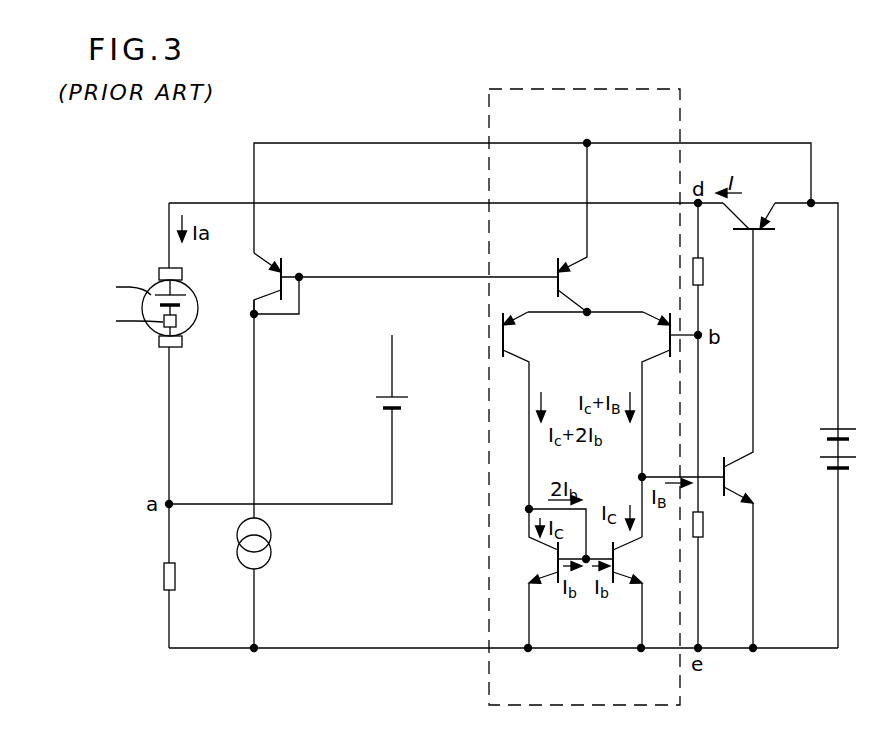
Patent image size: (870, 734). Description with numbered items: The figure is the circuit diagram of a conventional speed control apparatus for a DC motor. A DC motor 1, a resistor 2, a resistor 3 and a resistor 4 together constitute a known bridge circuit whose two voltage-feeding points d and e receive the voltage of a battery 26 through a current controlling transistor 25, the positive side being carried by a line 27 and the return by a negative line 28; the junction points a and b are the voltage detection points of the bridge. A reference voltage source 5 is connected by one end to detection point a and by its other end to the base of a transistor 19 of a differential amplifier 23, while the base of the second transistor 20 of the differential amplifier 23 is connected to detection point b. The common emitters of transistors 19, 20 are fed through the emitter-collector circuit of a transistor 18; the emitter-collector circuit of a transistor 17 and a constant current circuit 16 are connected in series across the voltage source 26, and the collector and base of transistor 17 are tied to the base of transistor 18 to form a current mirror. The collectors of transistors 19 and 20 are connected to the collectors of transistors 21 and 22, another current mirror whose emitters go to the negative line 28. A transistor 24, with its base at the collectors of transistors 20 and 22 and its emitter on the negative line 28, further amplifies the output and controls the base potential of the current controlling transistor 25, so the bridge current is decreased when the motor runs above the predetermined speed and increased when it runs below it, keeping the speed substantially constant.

The DC motor 1 is at (150, 285).
The resistor 2 is at (162, 576).
The resistor 3 is at (703, 263).
The resistor 4 is at (701, 526).
The reference voltage source 5 is at (398, 412).
The constant current circuit 16 is at (237, 553).
The transistor 17 is at (272, 282).
The transistor 18 is at (573, 278).
The transistor 19 is at (510, 336).
The transistor 20 is at (663, 338).
The transistor 21 is at (548, 562).
The transistor 22 is at (622, 562).
The differential amplifier 23 is at (617, 706).
The transistor 24 is at (735, 477).
The current controlling transistor 25 is at (765, 232).
The battery 26 is at (830, 428).
The power supply line 27 is at (736, 133).
The negative line 28 is at (783, 651).